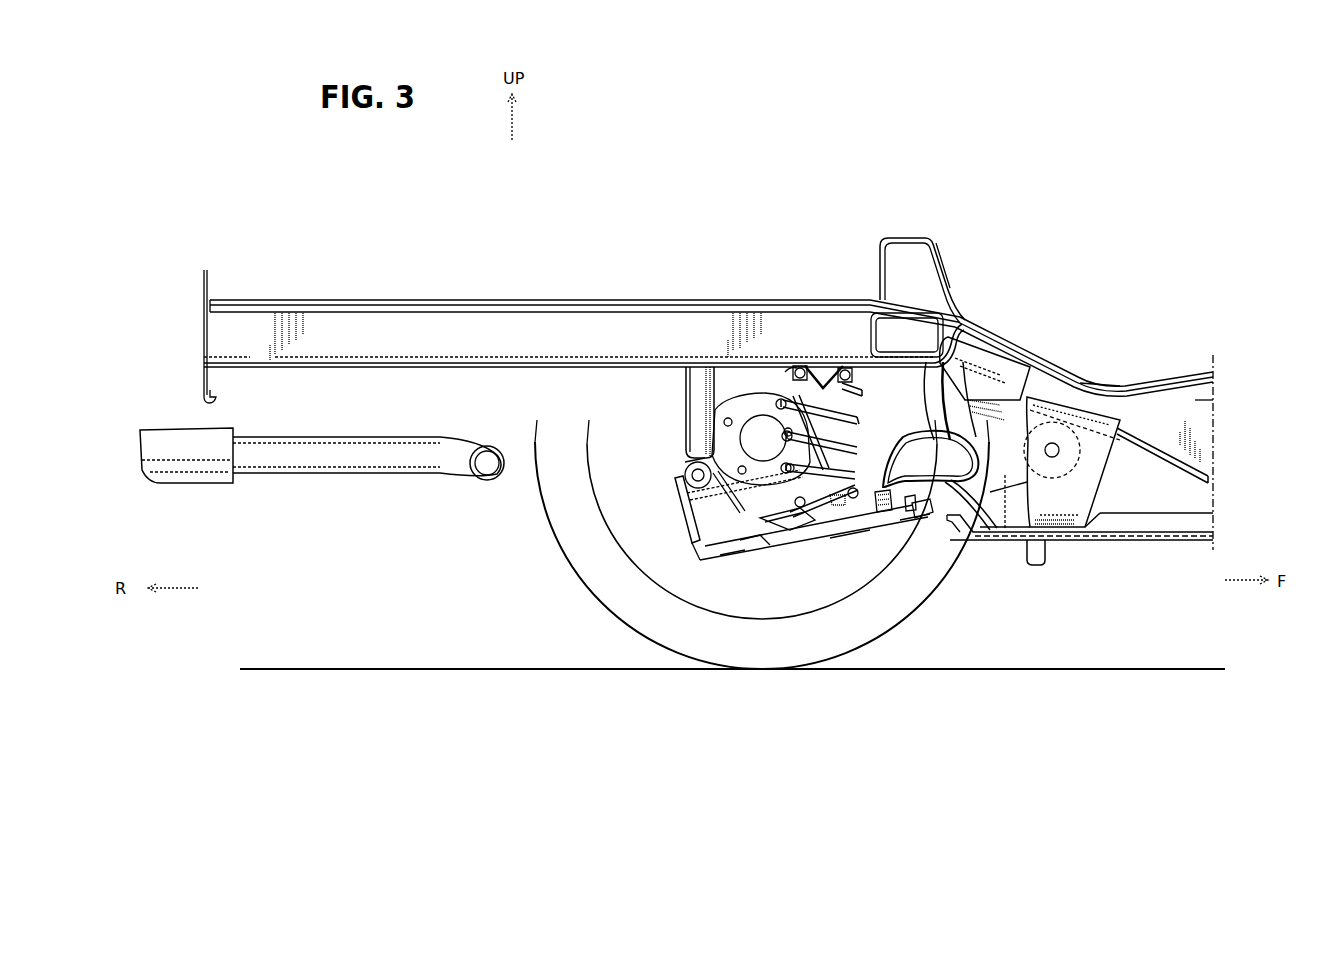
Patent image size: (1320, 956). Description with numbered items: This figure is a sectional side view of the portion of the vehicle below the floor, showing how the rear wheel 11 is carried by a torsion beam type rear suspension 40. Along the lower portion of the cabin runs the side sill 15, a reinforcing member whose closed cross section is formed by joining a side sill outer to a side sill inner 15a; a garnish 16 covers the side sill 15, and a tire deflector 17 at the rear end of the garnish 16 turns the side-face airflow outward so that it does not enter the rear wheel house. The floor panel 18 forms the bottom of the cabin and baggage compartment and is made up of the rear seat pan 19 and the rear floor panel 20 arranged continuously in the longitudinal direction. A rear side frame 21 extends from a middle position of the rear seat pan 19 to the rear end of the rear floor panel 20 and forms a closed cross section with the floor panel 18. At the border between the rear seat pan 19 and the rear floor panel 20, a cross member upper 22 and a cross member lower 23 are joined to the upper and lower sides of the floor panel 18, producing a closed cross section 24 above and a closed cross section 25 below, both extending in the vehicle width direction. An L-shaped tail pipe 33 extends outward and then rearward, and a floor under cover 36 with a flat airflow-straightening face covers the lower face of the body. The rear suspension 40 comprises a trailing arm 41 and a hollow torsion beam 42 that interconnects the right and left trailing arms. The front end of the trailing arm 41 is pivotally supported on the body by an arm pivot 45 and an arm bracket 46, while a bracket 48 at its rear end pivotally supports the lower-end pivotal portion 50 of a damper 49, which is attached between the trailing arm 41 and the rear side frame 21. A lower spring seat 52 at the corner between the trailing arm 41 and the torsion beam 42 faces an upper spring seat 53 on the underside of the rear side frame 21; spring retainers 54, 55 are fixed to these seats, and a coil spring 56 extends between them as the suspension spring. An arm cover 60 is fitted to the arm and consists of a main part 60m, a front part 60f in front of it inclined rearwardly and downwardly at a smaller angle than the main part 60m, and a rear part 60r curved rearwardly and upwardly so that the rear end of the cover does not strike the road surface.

The rear wheel 11 is at (902, 625).
The side sill 15 is at (1209, 485).
The side sill inner 15a is at (1213, 408).
The garnish 16 is at (1150, 544).
The tire deflector 17 is at (1046, 553).
The floor panel 18 is at (1183, 362).
The rear seat pan 19 is at (1101, 383).
The rear floor panel 20 is at (428, 302).
The rear side frame 21 is at (480, 366).
The cross member upper 22 is at (942, 268).
The cross member lower 23 is at (1003, 346).
The closed cross section 24 is at (904, 252).
The closed cross section 25 is at (916, 337).
The tail pipe 33 is at (308, 437).
The floor under cover 36 is at (1104, 545).
The rear suspension 40 is at (643, 535).
The trailing arm 41 is at (1010, 500).
The torsion beam 42 is at (920, 440).
The arm pivot 45 is at (1055, 450).
The arm bracket 46 is at (1103, 470).
The bracket 48 is at (678, 490).
The damper 49 is at (676, 398).
The lower-end pivotal portion 50 is at (690, 470).
The lower spring seat 52 is at (792, 532).
The upper spring seat 53 is at (805, 365).
The spring retainer 54 is at (795, 385).
The spring retainer 55 is at (797, 525).
The coil spring 56 is at (860, 424).
The arm cover 60 is at (830, 563).
The rear part 60r is at (726, 566).
The main part 60m is at (848, 548).
The front part 60f is at (917, 534).